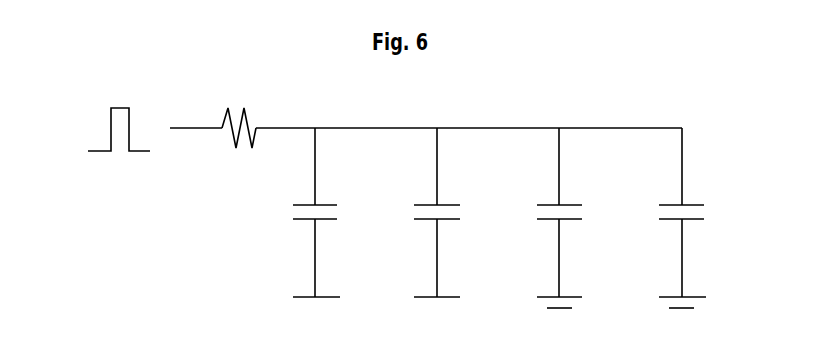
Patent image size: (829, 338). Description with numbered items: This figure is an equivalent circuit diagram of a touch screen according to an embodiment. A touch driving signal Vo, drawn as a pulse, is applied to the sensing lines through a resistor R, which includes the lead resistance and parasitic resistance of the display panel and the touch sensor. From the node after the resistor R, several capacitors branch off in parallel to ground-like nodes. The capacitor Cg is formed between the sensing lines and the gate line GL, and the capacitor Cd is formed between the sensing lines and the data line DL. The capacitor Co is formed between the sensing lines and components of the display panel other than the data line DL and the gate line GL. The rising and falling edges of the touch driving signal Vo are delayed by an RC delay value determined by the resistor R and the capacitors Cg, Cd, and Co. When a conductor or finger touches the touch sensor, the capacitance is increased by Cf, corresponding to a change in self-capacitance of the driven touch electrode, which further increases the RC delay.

The touch driving signal Vo is at (115, 123).
The resistor R is at (239, 115).
The capacitor between sensing lines and gate line Cg is at (327, 212).
The capacitor between sensing lines and data line Cd is at (449, 212).
The capacitor between sensing lines and other display panel components Co is at (572, 218).
The touch capacitance Cf is at (693, 218).
The gate line GL is at (316, 312).
The data line DL is at (437, 312).